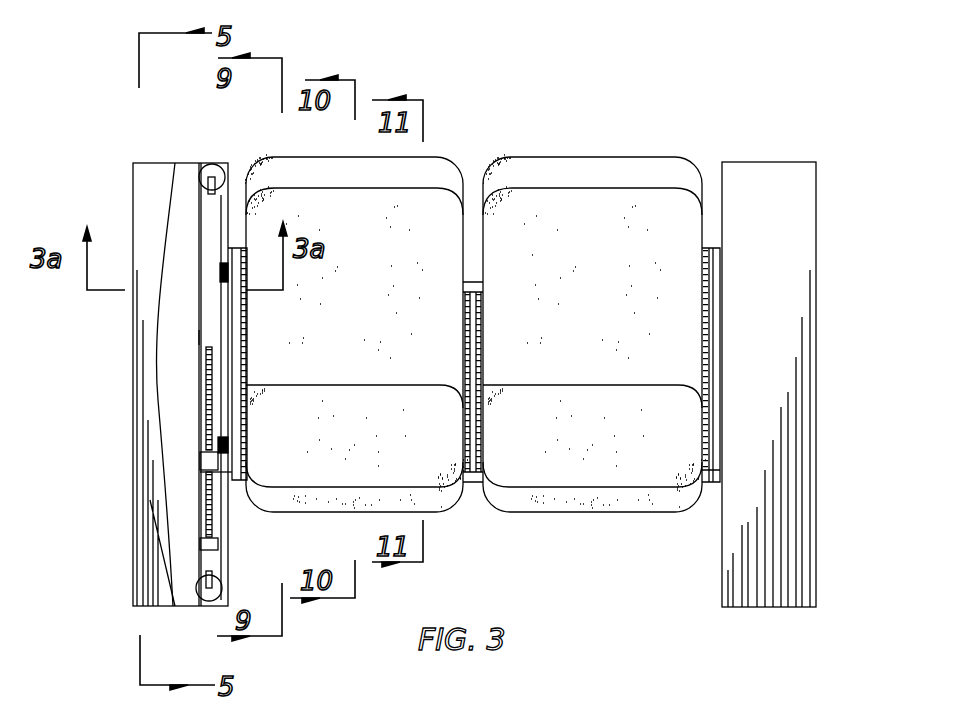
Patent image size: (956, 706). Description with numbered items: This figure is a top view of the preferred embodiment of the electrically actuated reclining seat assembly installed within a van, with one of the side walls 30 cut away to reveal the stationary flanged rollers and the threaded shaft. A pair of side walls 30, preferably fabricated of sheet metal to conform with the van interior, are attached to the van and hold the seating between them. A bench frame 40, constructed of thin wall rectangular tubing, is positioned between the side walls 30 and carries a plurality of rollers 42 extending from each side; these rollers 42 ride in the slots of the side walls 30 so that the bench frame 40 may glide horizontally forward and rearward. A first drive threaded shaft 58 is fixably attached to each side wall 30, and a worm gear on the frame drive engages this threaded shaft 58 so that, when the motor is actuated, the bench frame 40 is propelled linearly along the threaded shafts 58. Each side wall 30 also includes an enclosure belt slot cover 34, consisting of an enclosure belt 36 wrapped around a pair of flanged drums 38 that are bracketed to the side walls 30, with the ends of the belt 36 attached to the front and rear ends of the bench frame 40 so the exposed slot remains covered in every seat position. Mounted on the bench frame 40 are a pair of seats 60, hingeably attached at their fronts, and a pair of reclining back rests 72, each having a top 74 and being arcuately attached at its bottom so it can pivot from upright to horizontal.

The side wall 30 is at (138, 607).
The enclosure belt slot cover 34 is at (193, 206).
The enclosure belt 36 is at (197, 336).
The flanged drum 38 is at (210, 164).
The bench frame 40 is at (712, 330).
The roller 42 is at (220, 272).
The first drive threaded shaft 58 is at (205, 510).
The seat 60 is at (403, 473).
The reclining back rest 72 is at (430, 208).
The back rest top 74 is at (421, 170).